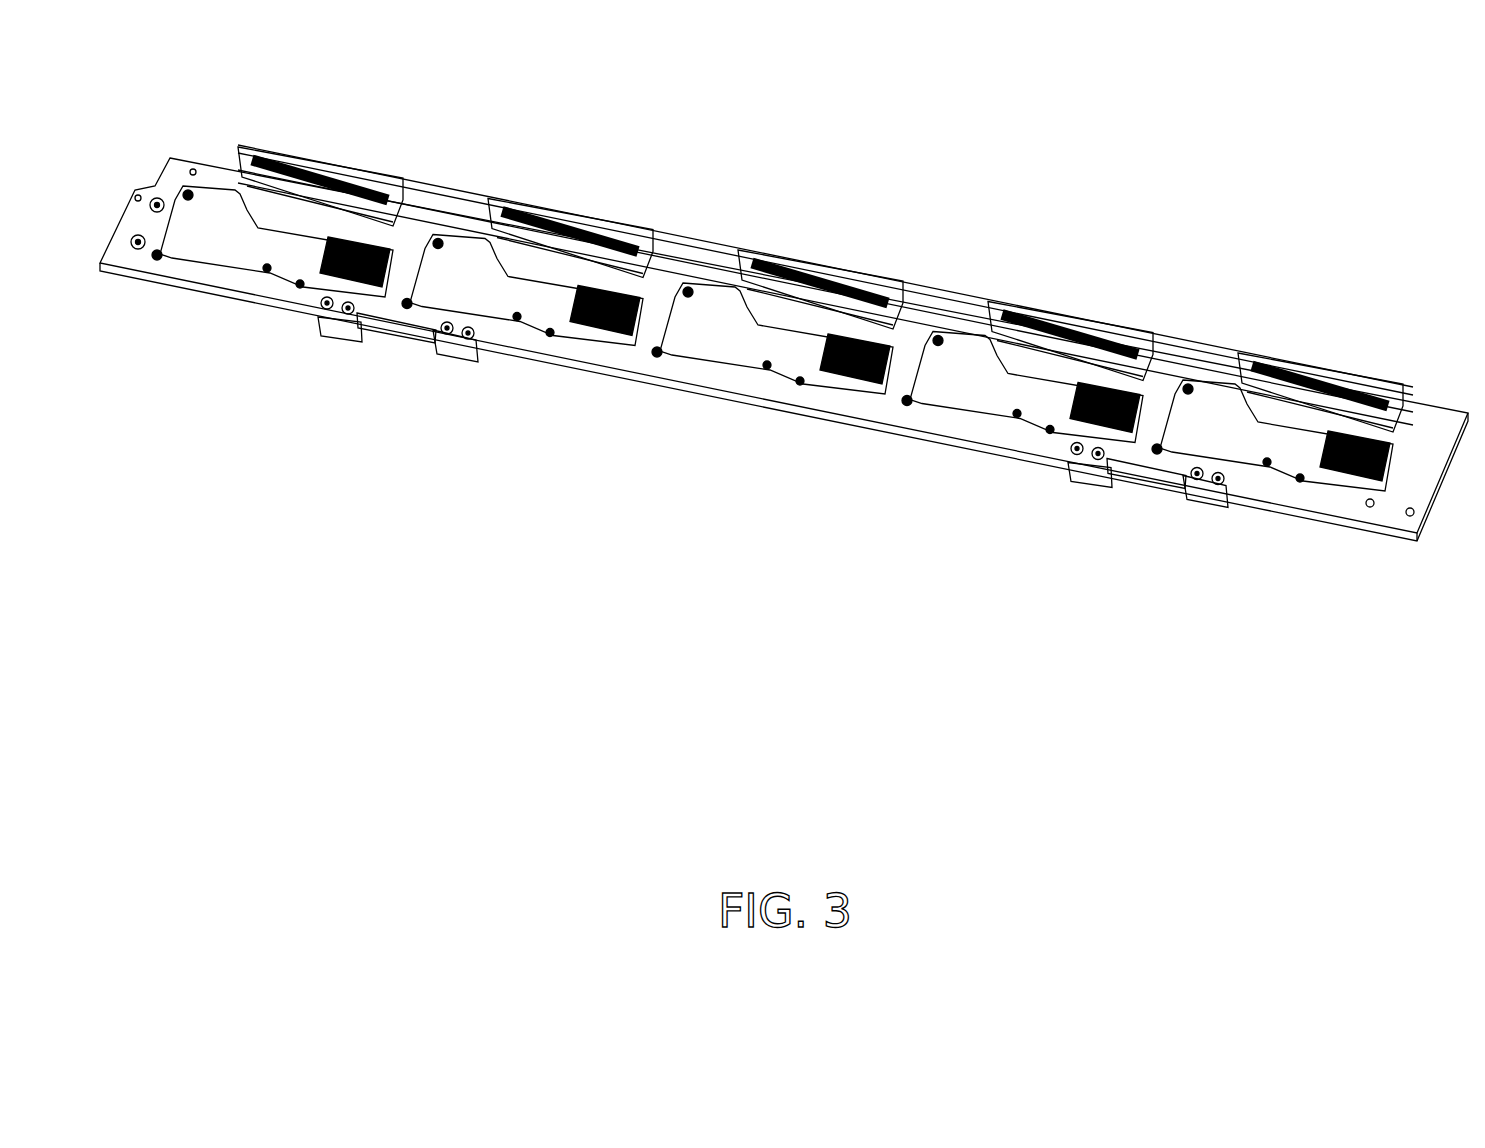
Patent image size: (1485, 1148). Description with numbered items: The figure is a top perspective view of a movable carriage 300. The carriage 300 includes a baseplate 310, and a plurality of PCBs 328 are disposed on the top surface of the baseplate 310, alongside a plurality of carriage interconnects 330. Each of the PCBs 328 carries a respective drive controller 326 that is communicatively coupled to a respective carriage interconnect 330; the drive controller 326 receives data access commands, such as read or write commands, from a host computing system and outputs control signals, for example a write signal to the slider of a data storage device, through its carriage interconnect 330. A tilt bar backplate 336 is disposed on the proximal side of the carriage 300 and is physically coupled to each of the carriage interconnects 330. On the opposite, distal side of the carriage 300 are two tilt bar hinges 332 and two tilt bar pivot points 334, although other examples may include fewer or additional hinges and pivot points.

The carriage 300 is at (1222, 128).
The baseplate 310 is at (168, 181).
The drive controller 326 is at (332, 275).
The PCB 328 is at (222, 233).
The carriage interconnect 330 is at (340, 170).
The tilt bar hinge 332 is at (348, 332).
The tilt bar pivot point 334 is at (400, 342).
The tilt bar backplate 336 is at (732, 250).